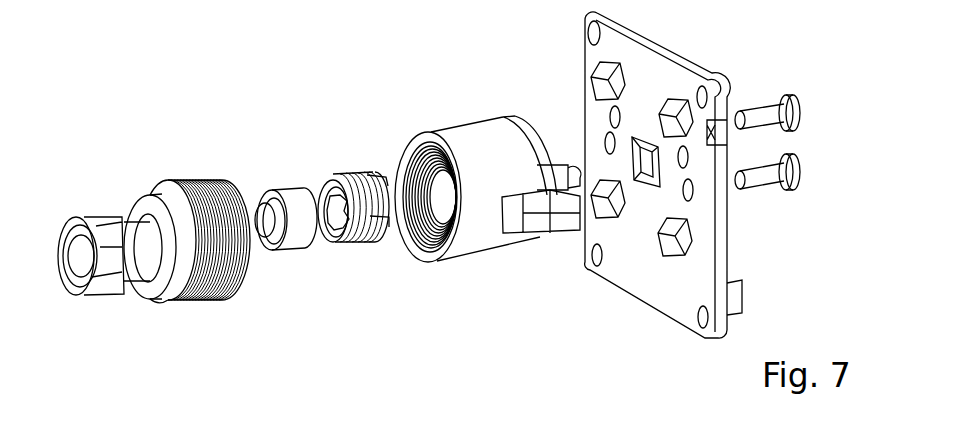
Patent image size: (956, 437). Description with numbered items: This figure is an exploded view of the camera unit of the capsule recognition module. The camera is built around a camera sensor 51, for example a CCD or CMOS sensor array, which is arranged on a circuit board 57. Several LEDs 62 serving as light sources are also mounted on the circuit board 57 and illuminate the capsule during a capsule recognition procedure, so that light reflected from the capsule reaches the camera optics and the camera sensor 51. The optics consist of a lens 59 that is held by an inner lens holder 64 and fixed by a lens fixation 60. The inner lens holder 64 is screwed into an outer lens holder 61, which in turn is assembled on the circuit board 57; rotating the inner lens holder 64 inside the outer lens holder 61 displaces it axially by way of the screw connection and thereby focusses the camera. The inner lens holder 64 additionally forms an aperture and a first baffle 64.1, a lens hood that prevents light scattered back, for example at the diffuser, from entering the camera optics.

The camera sensor 51 is at (642, 167).
The circuit board 57 is at (677, 292).
The lens 59 is at (275, 193).
The lens fixation 60 is at (352, 247).
The outer lens holder 61 is at (473, 150).
The LEDs 62 is at (595, 73).
The inner lens holder 64 is at (141, 196).
The first baffle 64.1 is at (126, 265).